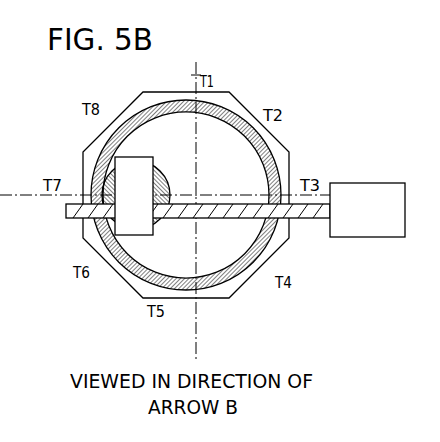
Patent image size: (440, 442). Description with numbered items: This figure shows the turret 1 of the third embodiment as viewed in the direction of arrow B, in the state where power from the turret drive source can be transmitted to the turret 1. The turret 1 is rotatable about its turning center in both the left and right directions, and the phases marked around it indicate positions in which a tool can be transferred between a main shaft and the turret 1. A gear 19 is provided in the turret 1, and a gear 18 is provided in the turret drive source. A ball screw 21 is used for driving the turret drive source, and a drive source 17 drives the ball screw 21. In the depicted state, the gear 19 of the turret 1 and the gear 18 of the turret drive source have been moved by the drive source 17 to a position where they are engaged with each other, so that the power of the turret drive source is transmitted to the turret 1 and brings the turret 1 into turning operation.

The turret 1 is at (85, 151).
The drive source 17 is at (380, 238).
The gear 18 is at (93, 220).
The gear 19 is at (205, 292).
The ball screw 21 is at (309, 220).